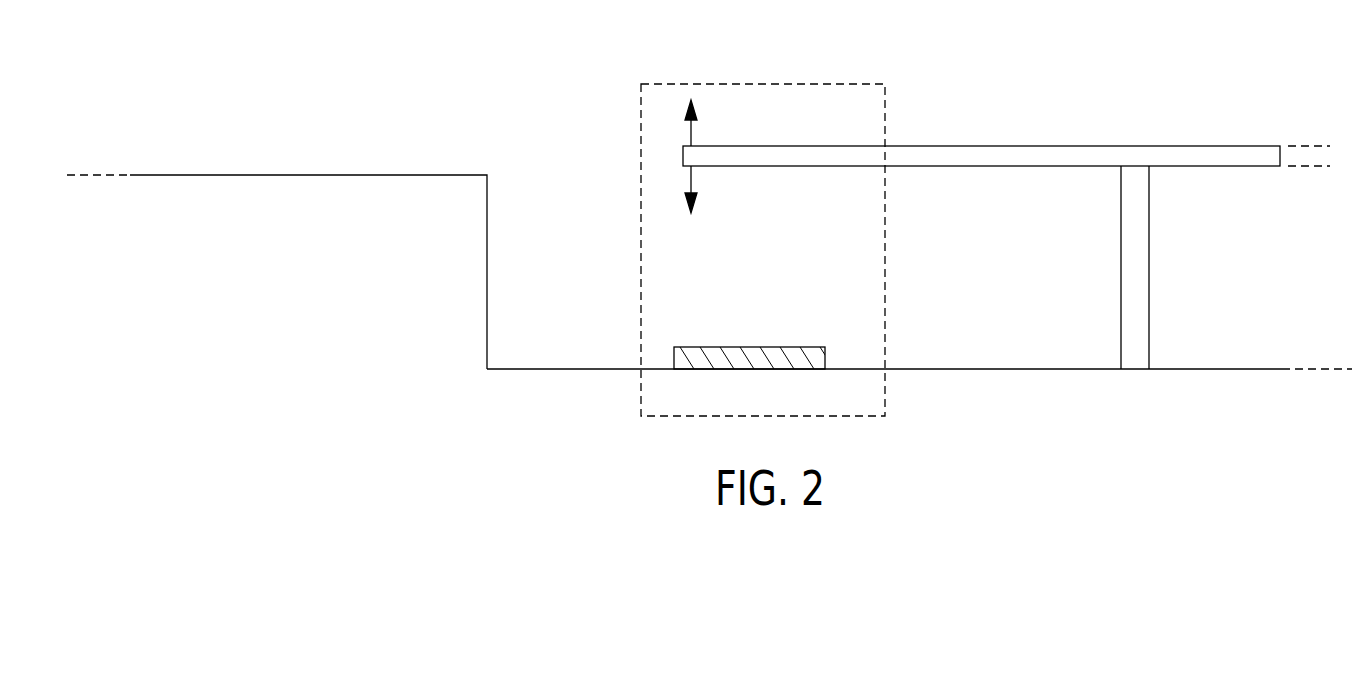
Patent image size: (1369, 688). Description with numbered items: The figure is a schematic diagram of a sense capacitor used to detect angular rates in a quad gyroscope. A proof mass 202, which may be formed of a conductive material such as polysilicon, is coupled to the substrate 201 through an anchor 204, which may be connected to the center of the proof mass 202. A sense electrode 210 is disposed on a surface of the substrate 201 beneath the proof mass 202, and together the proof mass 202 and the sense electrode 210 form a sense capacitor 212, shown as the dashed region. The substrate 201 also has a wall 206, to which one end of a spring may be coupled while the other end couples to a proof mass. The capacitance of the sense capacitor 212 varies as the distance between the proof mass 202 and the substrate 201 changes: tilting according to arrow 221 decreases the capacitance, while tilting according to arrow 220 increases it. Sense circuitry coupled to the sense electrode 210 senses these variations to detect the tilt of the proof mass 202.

The substrate 201 is at (567, 369).
The proof mass 202 is at (932, 146).
The anchor 204 is at (1132, 253).
The wall 206 is at (487, 240).
The sense electrode 210 is at (765, 347).
The sense capacitor 212 is at (858, 83).
The arrow 220 is at (693, 178).
The arrow 221 is at (693, 133).